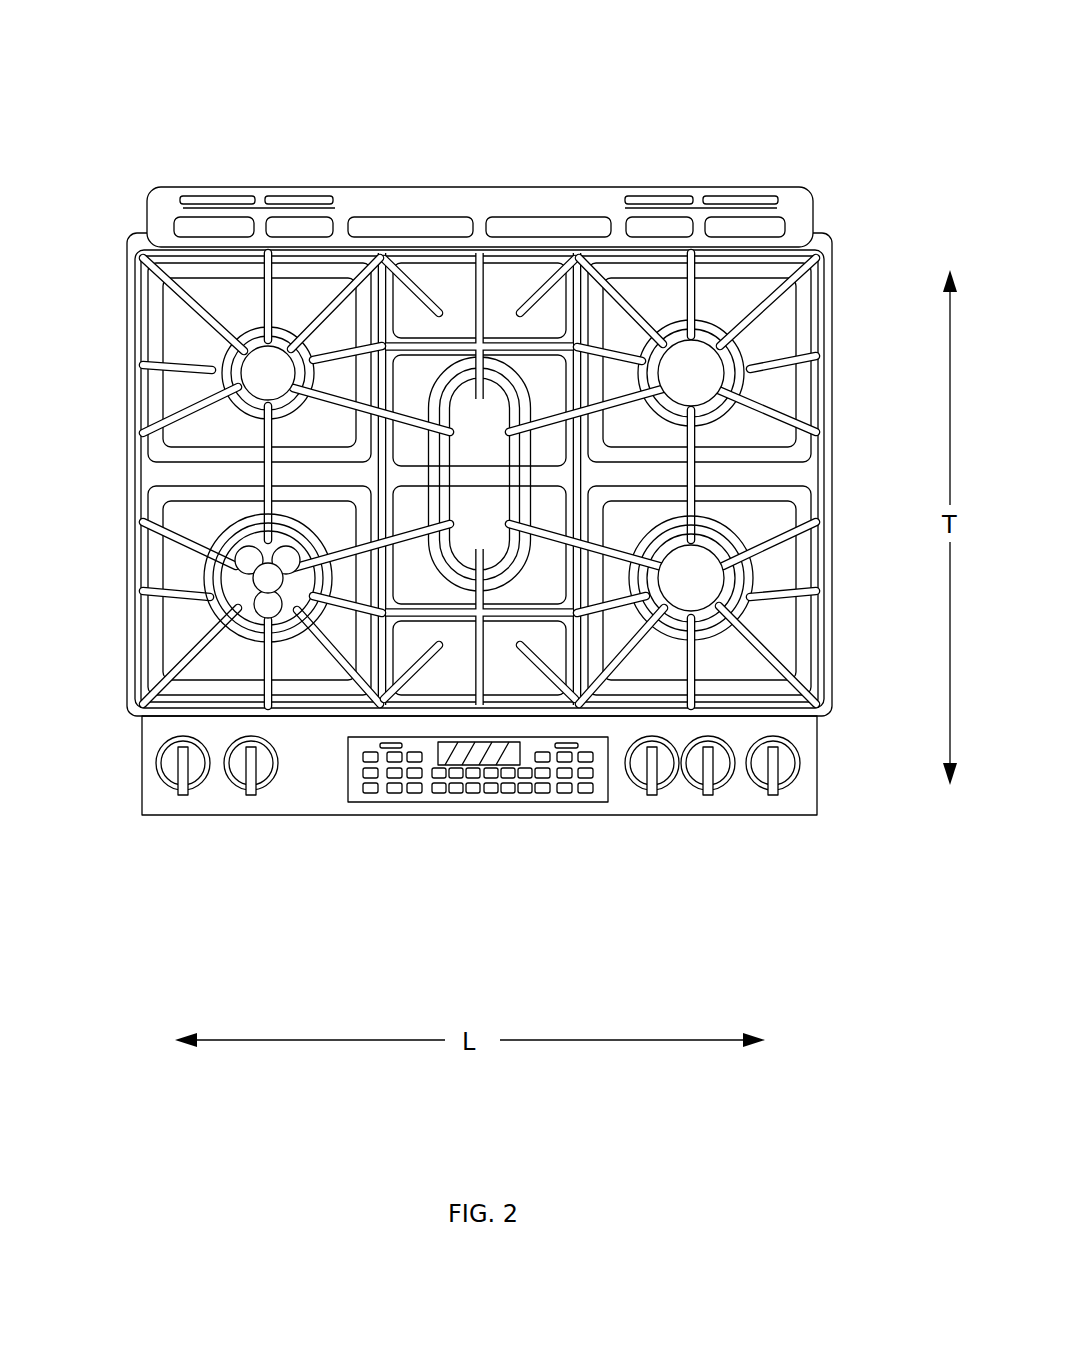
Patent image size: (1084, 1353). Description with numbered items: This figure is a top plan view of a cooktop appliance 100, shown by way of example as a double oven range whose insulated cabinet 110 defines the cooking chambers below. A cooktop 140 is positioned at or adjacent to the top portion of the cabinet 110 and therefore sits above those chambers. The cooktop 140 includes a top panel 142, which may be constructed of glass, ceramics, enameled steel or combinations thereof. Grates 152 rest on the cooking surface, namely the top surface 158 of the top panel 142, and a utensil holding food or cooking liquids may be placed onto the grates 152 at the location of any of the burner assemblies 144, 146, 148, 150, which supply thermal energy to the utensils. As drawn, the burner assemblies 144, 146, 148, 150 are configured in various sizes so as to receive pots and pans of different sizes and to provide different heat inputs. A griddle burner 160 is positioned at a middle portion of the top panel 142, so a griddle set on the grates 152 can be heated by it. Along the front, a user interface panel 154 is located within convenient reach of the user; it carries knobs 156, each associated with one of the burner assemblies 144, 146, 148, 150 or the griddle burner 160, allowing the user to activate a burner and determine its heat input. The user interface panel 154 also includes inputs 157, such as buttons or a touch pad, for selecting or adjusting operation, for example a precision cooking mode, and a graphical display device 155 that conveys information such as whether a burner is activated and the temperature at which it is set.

The cooktop appliance 100 is at (163, 108).
The insulated cabinet 110 is at (540, 196).
The cooktop 140 is at (833, 226).
The top panel 142 is at (805, 632).
The burner assembly 144 is at (250, 378).
The burner assembly 146 is at (250, 552).
The burner assembly 148 is at (700, 362).
The burner assembly 150 is at (700, 565).
The grates 152 is at (150, 592).
The user interface panel 154 is at (413, 803).
The graphical display device 155 is at (449, 800).
The knobs 156 is at (233, 783).
The inputs 157 is at (393, 792).
The top surface 158 is at (165, 636).
The griddle burner 160 is at (489, 410).